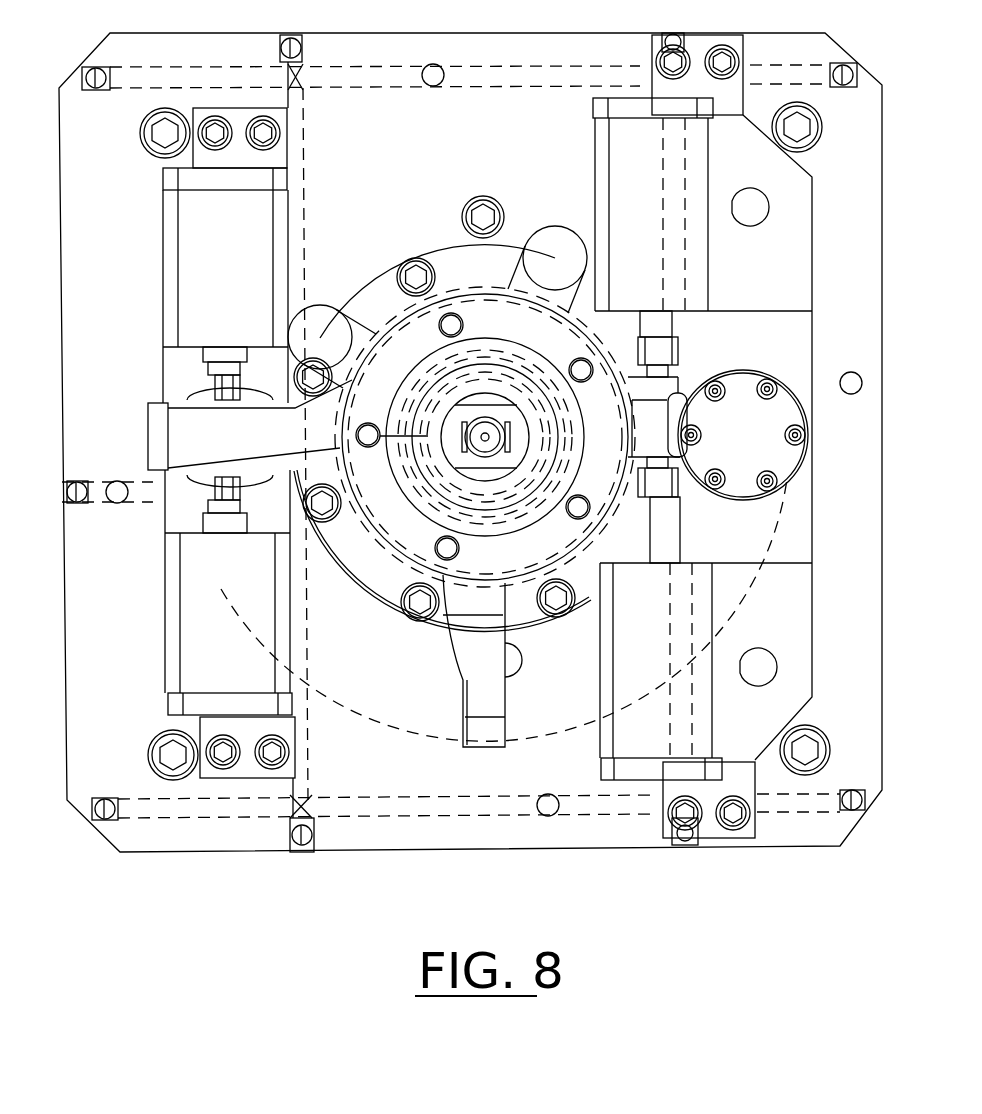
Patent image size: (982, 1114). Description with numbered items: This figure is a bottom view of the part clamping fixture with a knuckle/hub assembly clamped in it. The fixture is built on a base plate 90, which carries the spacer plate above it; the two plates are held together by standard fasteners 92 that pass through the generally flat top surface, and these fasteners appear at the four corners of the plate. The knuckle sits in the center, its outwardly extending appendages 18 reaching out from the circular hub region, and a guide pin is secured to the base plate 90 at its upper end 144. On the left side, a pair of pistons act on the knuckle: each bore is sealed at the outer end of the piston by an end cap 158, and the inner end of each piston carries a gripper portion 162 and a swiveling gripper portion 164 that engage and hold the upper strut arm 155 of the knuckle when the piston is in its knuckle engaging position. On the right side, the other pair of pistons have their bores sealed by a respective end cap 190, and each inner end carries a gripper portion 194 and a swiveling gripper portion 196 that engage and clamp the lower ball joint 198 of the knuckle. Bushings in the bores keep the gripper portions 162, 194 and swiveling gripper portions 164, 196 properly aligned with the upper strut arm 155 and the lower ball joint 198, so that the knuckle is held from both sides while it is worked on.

The base plate 90 is at (72, 278).
The fasteners 92 is at (141, 136).
The end cap 158 is at (218, 180).
The gripper portion 162 is at (237, 346).
The swiveling gripper portion 164 is at (222, 384).
The upper strut arm 155 is at (183, 422).
The upper end of guide pin 144 is at (457, 327).
The outwardly extending appendages 18 is at (492, 642).
The end cap 190 is at (640, 108).
The gripper portion 194 is at (660, 317).
The swiveling gripper portion 196 is at (660, 350).
The lower ball joint 198 is at (653, 387).